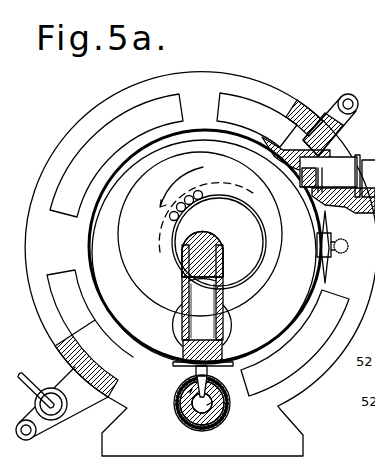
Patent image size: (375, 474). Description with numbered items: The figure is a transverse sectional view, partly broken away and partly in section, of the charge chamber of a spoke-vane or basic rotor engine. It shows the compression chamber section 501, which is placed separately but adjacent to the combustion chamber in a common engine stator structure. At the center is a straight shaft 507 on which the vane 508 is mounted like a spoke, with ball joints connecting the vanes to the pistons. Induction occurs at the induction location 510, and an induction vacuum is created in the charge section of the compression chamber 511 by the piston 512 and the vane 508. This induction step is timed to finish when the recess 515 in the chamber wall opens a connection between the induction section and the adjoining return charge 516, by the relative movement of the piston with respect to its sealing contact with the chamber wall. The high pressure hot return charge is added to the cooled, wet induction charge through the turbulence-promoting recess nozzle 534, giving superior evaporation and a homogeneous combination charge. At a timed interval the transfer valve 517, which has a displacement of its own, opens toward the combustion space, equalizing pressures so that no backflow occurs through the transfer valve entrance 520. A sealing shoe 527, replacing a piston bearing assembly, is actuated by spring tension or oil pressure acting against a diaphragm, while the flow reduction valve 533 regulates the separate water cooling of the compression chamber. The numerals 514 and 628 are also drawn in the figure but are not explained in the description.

The compression chamber section 501 is at (252, 88).
The induction location 510 is at (338, 178).
The balls 514 is at (300, 188).
The sealing shoe 527 is at (318, 250).
The charge section of the compression chamber 511 is at (120, 228).
The piston 512 is at (123, 253).
The straight shaft 507 is at (224, 240).
The vane 508 is at (195, 293).
The turbulence-promoting recess nozzle 534 is at (173, 323).
The tube interior 628 is at (204, 311).
The return charge 516 is at (233, 352).
The transfer valve entrance 520 is at (194, 371).
The recess 515 is at (243, 372).
The transfer valve 517 is at (224, 422).
The flow reduction valve 533 is at (56, 407).